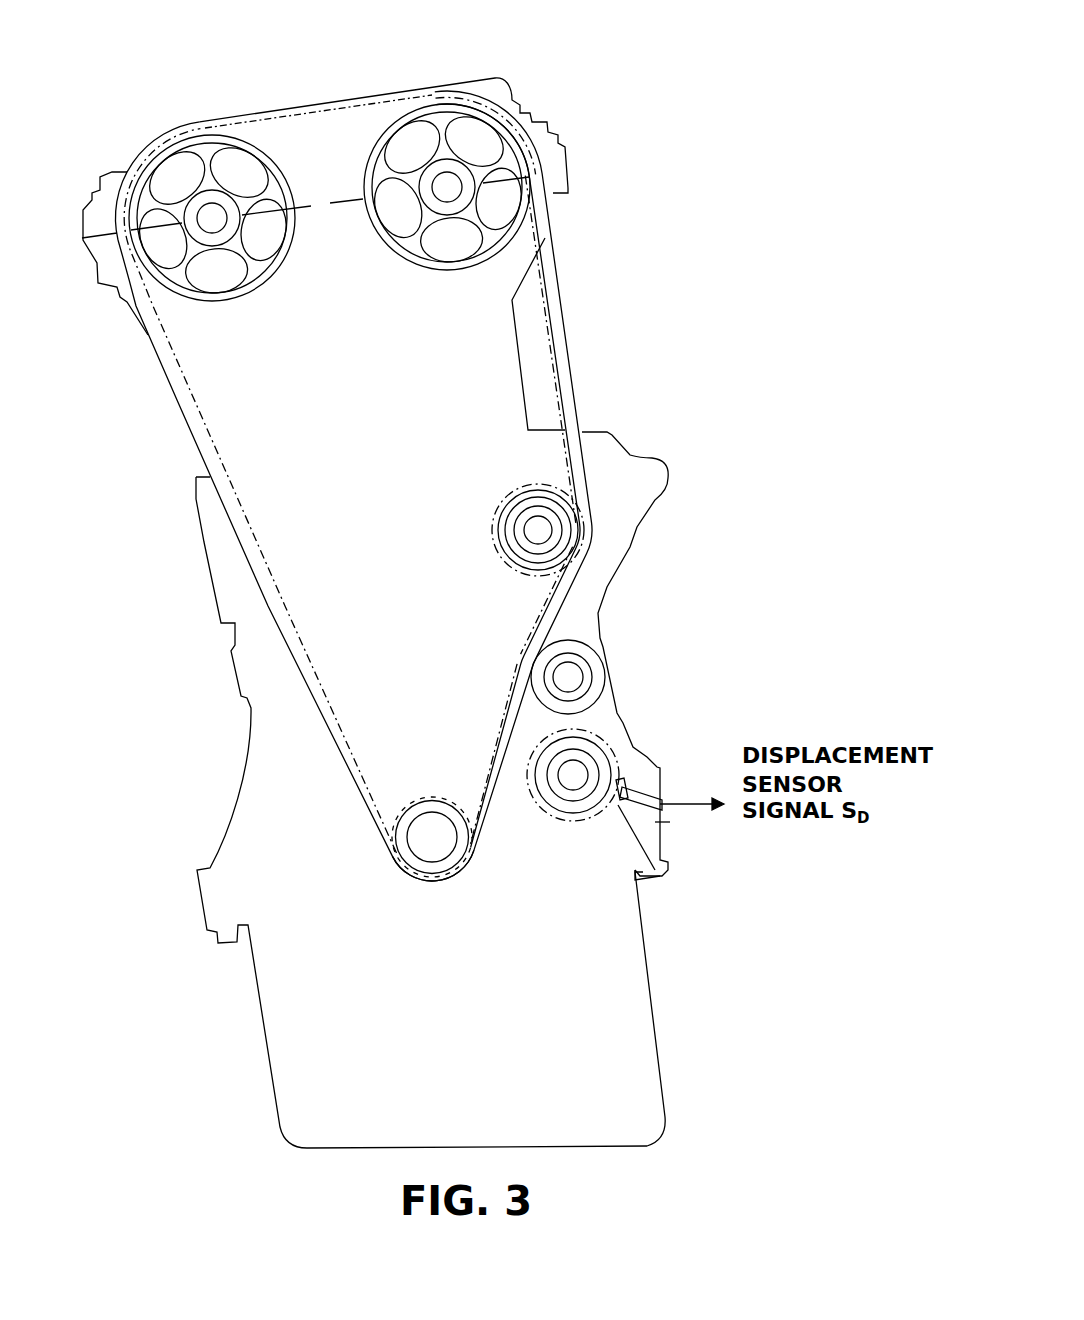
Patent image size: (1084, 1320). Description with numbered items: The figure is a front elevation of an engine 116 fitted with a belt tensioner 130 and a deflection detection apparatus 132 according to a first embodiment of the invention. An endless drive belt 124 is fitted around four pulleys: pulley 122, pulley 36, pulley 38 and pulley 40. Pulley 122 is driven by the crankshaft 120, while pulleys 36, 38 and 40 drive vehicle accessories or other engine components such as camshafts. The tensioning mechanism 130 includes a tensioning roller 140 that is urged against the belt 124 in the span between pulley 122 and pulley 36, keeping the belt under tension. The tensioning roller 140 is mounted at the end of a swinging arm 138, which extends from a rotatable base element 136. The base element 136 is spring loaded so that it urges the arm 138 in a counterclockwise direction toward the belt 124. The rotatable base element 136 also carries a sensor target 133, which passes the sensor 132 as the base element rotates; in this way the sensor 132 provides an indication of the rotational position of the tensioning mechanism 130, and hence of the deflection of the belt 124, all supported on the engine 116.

The pulley 40 is at (210, 190).
The pulley 38 is at (447, 165).
The endless drive belt 124 is at (568, 318).
The engine 116 is at (648, 475).
The pulley 36 is at (500, 500).
The tensioning roller 140 is at (580, 668).
The belt tensioner 130 is at (624, 701).
The swinging arm 138 is at (590, 722).
The rotatable base element 136 is at (573, 800).
The sensor 132 is at (662, 808).
The sensor target 133 is at (645, 873).
The crankshaft 120 is at (440, 842).
The pulley 122 is at (432, 800).